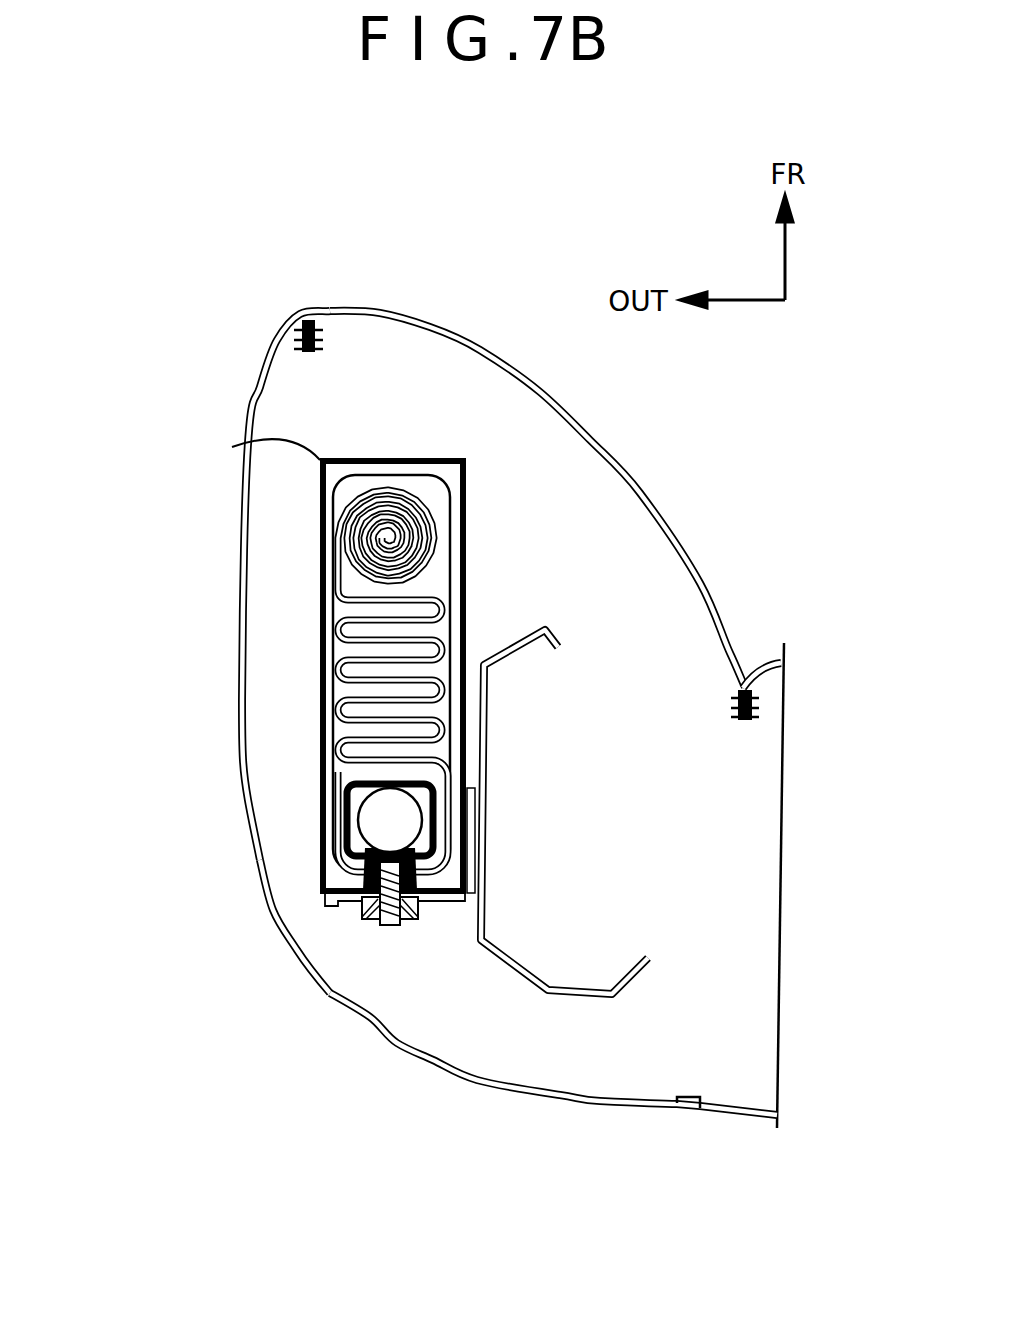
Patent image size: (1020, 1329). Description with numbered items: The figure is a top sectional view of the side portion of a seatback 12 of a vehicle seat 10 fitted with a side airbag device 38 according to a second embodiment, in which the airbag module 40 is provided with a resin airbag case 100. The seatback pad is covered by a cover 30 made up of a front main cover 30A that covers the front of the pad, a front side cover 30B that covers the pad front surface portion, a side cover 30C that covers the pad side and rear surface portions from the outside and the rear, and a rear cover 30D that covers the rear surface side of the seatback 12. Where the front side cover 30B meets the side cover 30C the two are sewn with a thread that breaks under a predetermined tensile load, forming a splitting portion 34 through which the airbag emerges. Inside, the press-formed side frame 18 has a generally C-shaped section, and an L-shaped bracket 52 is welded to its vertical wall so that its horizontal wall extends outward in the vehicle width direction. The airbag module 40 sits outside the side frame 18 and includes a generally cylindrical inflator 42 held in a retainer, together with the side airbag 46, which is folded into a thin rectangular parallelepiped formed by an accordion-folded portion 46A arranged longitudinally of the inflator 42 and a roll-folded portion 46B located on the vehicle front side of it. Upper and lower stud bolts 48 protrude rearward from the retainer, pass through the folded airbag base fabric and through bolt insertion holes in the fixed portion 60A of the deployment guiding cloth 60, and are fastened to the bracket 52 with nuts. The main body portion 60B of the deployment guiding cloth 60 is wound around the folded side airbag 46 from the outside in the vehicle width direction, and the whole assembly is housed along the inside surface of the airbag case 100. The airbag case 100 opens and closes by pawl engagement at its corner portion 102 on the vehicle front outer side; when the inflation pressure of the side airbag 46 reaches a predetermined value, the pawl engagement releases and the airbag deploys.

The vehicle door 10 is at (461, 756).
The seatback 12 is at (461, 756).
The side frame 18 is at (572, 997).
The cover 30 is at (461, 756).
The front main cover 30A is at (752, 682).
The front side cover 30B is at (600, 418).
The side cover 30C is at (243, 727).
The rear cover 30D is at (758, 1120).
The splitting portion 34 is at (310, 322).
The side airbag device 38 is at (326, 926).
The airbag module 40 is at (241, 926).
The inflator 42 is at (335, 826).
The side airbag 46 is at (260, 681).
The accordion-folded portion 46A is at (338, 650).
The roll-folded portion 46B is at (343, 540).
The stud bolt 48 is at (388, 924).
The bracket 52 is at (440, 906).
The deployment guiding cloth 60 is at (360, 651).
The fixed portion 60A is at (372, 917).
The main body portion 60B is at (378, 470).
The airbag case 100 is at (320, 790).
The corner portion 102 is at (232, 447).